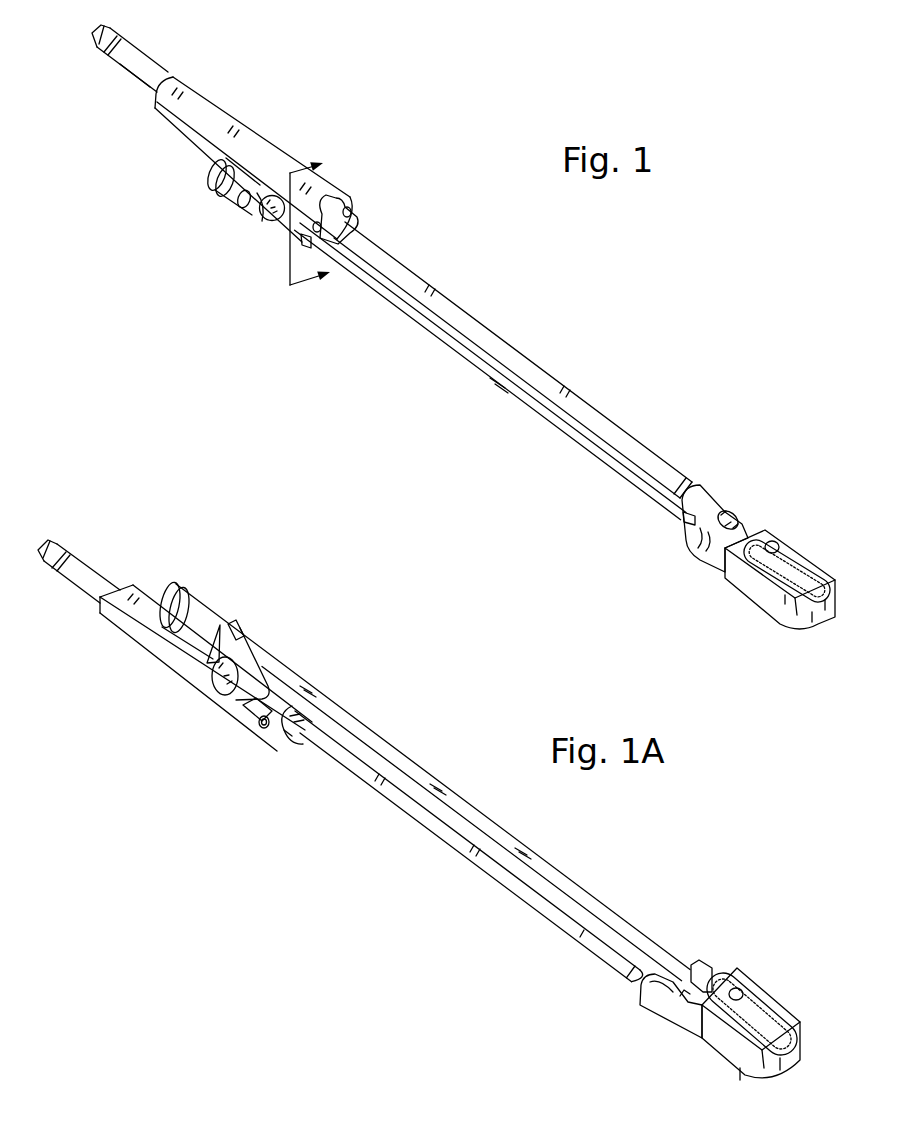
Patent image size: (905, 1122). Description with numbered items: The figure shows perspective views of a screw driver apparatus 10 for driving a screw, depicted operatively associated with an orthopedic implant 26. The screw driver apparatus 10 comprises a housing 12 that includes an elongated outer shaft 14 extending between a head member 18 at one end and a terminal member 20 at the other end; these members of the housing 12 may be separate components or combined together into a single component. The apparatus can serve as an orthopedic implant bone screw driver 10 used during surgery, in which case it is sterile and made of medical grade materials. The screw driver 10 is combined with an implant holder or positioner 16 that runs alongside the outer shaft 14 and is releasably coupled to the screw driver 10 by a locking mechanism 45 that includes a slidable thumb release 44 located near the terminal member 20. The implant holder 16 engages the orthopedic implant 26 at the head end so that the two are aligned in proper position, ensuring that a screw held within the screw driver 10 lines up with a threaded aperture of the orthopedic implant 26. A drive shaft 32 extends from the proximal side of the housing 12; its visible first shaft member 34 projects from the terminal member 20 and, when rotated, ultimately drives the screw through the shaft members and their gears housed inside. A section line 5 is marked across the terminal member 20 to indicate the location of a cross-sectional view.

In FIG. 1, the screw driver apparatus 10 is at (400, 112).
In FIG. 1A, the screw driver apparatus 10 is at (270, 888).
In FIG. 1, the housing 12 is at (403, 252).
In FIG. 1A, the housing 12 is at (287, 765).
In FIG. 1, the elongated outer shaft 14 is at (545, 378).
In FIG. 1A, the elongated outer shaft 14 is at (417, 817).
In FIG. 1A, the implant holder or positioner 16 is at (415, 762).
In FIG. 1, the head member 18 is at (710, 502).
In FIG. 1A, the head member 18 is at (658, 1000).
In FIG. 1, the terminal member 20 is at (241, 148).
In FIG. 1A, the terminal member 20 is at (160, 650).
In FIG. 1, the orthopedic implant 26 is at (757, 630).
In FIG. 1A, the orthopedic implant 26 is at (756, 960).
In FIG. 1, the drive shaft 32 is at (160, 44).
In FIG. 1, the first shaft member 34 is at (128, 93).
In FIG. 1, the slidable thumb release 44 is at (256, 220).
In FIG. 1A, the slidable thumb release 44 is at (231, 666).
In FIG. 1, the locking mechanism 45 is at (250, 228).
In FIG. 1, the section line 5- 5 is at (310, 227).